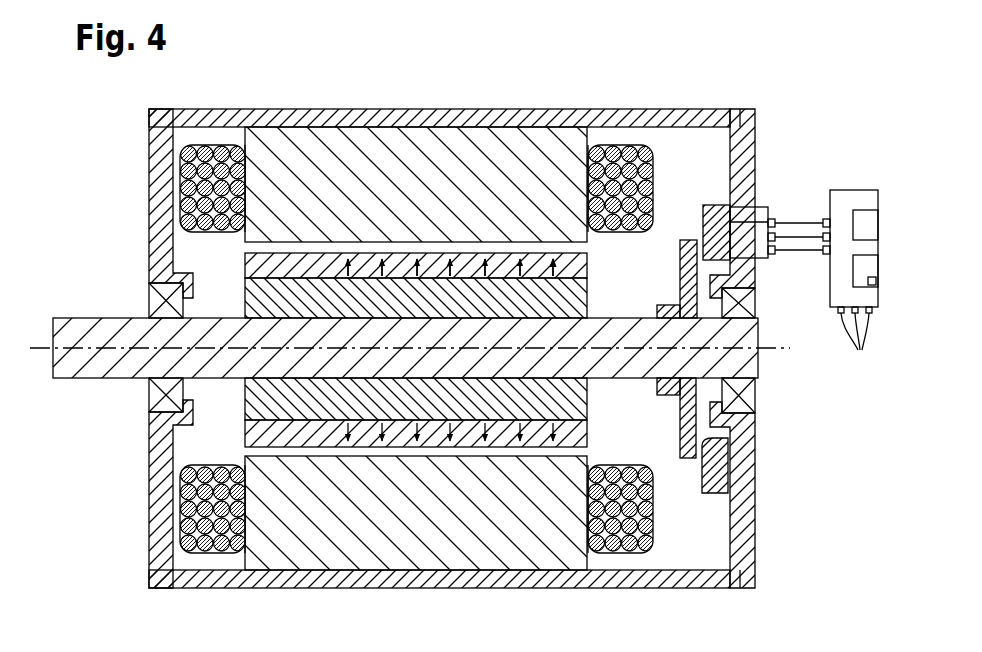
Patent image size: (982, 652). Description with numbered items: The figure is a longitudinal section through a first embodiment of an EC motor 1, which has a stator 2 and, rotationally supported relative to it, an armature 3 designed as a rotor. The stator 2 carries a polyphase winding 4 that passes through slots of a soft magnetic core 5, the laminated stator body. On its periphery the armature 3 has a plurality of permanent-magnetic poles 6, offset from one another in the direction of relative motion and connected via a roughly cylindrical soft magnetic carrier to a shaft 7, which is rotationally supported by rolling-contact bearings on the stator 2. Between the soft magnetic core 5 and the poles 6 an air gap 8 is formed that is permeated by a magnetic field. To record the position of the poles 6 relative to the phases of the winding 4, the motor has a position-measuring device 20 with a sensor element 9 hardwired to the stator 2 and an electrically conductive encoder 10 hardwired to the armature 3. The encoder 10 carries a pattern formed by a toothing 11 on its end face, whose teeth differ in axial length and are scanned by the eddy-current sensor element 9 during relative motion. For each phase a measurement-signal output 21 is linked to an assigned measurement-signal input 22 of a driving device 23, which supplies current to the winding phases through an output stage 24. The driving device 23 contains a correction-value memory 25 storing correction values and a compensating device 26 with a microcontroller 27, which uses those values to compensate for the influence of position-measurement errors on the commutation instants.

The EC motor 1 is at (482, 351).
The stator 2 is at (108, 225).
The armature 3 is at (188, 438).
The polyphase winding 4 is at (208, 150).
The soft magnetic core 5 is at (358, 152).
The permanent-magnetic poles 6 is at (572, 268).
The shaft 7 is at (748, 353).
The air gap 8 is at (247, 250).
The sensor element 9 is at (717, 213).
The encoder 10 is at (686, 460).
The toothing 11 is at (706, 433).
The position-measuring device 20 is at (692, 221).
The measurement-signal output 21 is at (777, 249).
The measurement-signal input 22 is at (826, 218).
The driving device 23 is at (853, 198).
The output stage 24 is at (860, 344).
The correction-value memory 25 is at (871, 223).
The compensating device 26 is at (871, 267).
The microcontroller 27 is at (874, 284).